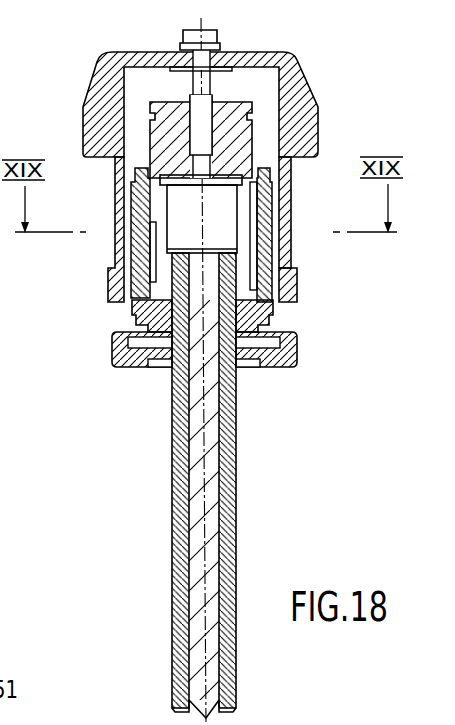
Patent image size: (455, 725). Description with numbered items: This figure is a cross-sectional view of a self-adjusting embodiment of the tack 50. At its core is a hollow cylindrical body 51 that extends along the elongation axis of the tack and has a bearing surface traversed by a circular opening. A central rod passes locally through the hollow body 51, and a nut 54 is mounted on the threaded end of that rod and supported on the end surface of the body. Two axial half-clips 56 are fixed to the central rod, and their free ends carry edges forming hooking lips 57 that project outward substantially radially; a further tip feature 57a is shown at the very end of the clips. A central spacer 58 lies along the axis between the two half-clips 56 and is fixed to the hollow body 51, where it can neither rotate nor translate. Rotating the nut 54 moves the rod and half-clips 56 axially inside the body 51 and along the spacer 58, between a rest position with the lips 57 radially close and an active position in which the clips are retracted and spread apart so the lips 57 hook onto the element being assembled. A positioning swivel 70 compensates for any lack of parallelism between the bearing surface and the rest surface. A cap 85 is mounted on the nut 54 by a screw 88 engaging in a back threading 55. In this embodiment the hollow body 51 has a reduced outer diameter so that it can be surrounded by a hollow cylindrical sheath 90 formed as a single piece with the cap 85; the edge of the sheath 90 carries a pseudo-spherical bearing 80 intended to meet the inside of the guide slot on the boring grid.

The tack 50 is at (194, 192).
The hollow cylindrical body 51 is at (118, 280).
The nut 54 is at (150, 215).
The back threading 55 is at (250, 107).
The axial half-clips 56 is at (213, 485).
The hooking lips 57 is at (178, 703).
The tip end 57a is at (236, 700).
The central spacer 58 is at (208, 508).
The positioning swivel 70 is at (310, 350).
The pseudo-spherical bearing 80 is at (297, 288).
The cap 85 is at (302, 130).
The screw 88 is at (208, 82).
The hollow cylindrical sheath 90 is at (285, 203).